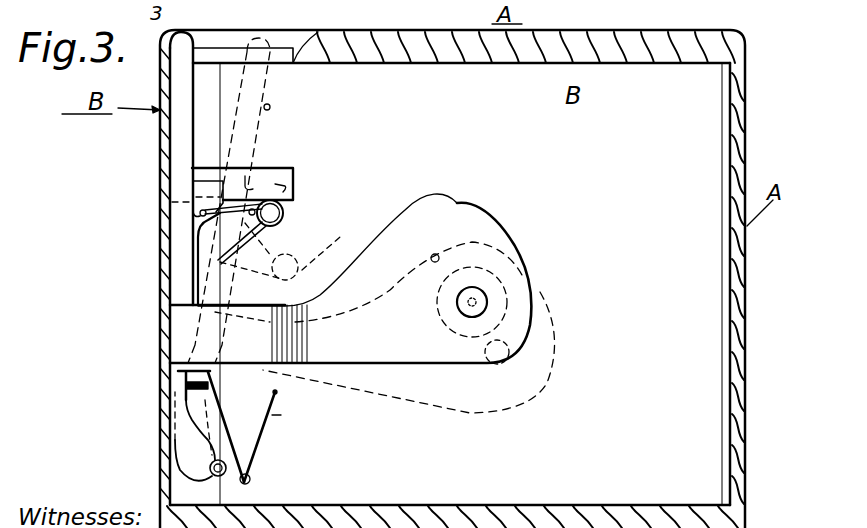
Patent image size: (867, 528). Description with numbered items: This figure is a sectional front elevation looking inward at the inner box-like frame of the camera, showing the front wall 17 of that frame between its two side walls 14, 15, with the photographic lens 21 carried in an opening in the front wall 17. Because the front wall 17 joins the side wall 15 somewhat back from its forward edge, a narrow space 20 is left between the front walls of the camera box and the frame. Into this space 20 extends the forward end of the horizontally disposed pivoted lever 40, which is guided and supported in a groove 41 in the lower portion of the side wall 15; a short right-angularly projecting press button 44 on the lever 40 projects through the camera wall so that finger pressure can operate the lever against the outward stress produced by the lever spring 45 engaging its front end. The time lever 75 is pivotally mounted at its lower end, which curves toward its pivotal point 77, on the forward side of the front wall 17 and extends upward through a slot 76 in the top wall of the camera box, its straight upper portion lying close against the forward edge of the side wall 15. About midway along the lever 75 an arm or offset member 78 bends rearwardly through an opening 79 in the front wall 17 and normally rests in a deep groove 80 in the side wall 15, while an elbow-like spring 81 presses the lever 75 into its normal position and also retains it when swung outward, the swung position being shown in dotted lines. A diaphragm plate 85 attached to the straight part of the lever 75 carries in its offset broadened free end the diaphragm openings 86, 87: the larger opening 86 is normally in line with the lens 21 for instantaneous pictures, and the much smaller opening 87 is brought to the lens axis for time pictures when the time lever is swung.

The side wall 14 is at (723, 267).
The side wall 15 is at (162, 238).
The front wall 17 is at (464, 75).
The narrow space 20 is at (452, 295).
The photographic lens 21 is at (497, 277).
The pivoted lever 40 is at (223, 410).
The groove 41 is at (218, 383).
The press button 44 is at (160, 386).
The lever spring 45 is at (281, 437).
The time lever 75 is at (187, 272).
The slot 76 is at (282, 63).
The pivotal point 77 is at (200, 470).
The arm or offset member 78 is at (243, 167).
The opening 79 is at (293, 183).
The deep groove 80 is at (192, 183).
The elbow-like spring 81 is at (284, 218).
The diaphragm plate 85 is at (455, 205).
The diaphragm opening 86 is at (496, 366).
The diaphragm opening 87 is at (431, 256).